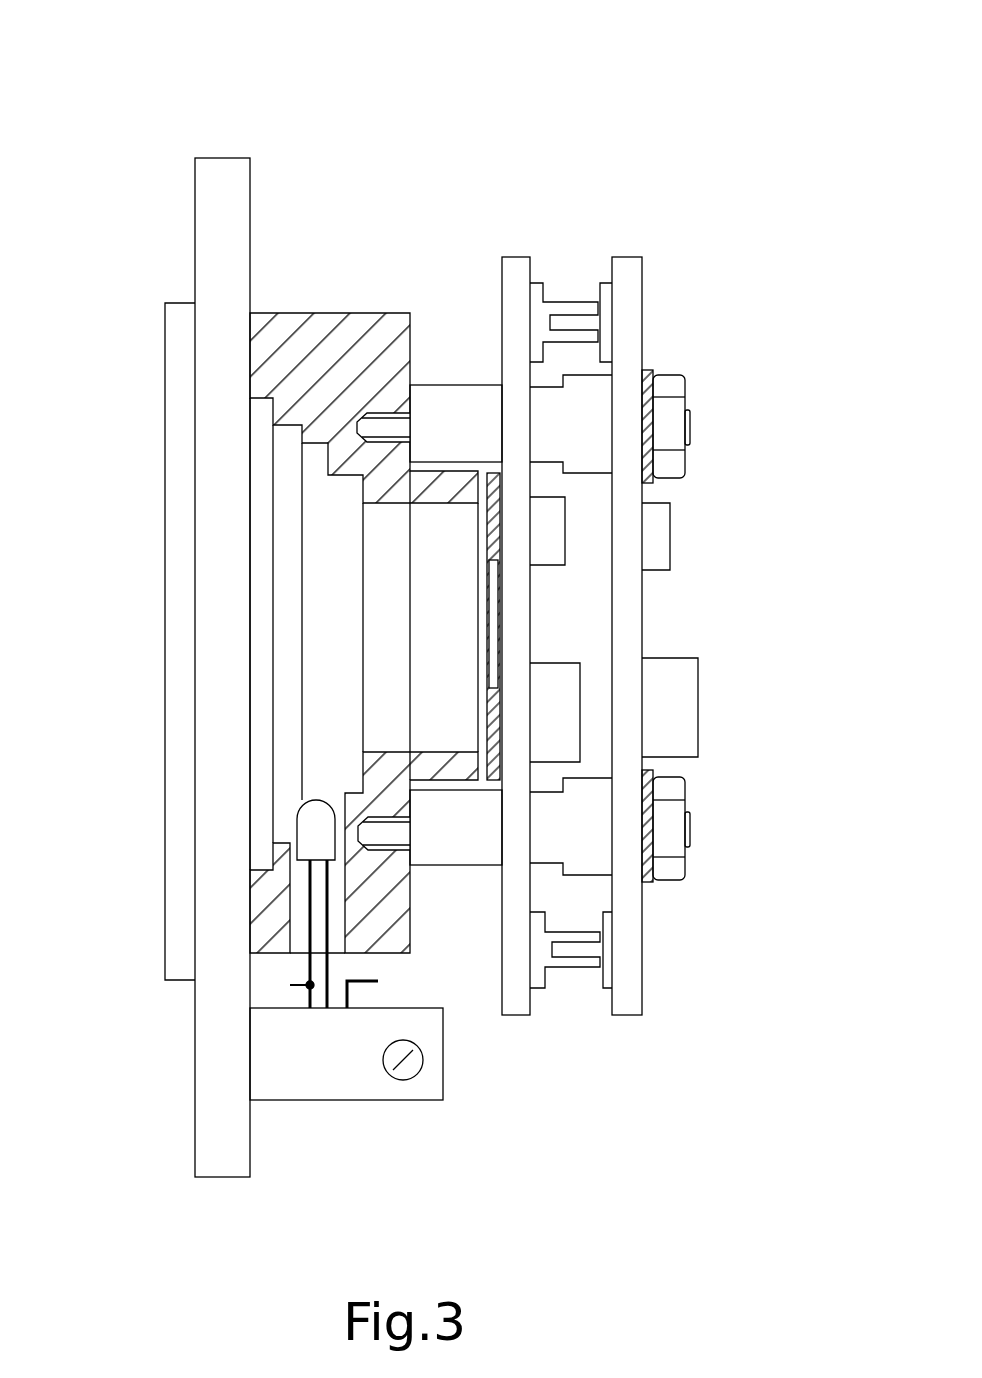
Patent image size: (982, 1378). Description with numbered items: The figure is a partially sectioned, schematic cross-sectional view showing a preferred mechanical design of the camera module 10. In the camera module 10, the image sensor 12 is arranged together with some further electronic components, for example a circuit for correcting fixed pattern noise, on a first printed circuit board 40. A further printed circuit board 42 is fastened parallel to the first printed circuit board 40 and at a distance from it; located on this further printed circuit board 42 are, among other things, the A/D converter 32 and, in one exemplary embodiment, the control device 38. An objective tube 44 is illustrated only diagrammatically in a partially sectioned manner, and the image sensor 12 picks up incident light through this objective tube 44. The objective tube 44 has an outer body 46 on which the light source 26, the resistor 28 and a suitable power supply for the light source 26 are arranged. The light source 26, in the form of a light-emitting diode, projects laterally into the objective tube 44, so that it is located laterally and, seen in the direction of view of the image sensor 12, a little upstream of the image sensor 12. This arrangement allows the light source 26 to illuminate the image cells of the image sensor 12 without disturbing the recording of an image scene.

The camera module 10 is at (650, 157).
The image sensor 12 is at (498, 658).
The light source 26 is at (310, 820).
The resistor 28 is at (313, 1075).
The A/D converter 32 is at (658, 545).
The control device 38 is at (670, 727).
The first printed circuit board 40 is at (517, 998).
The further printed circuit board 42 is at (632, 985).
The objective tube 44 is at (330, 313).
The outer body 46 is at (208, 1135).